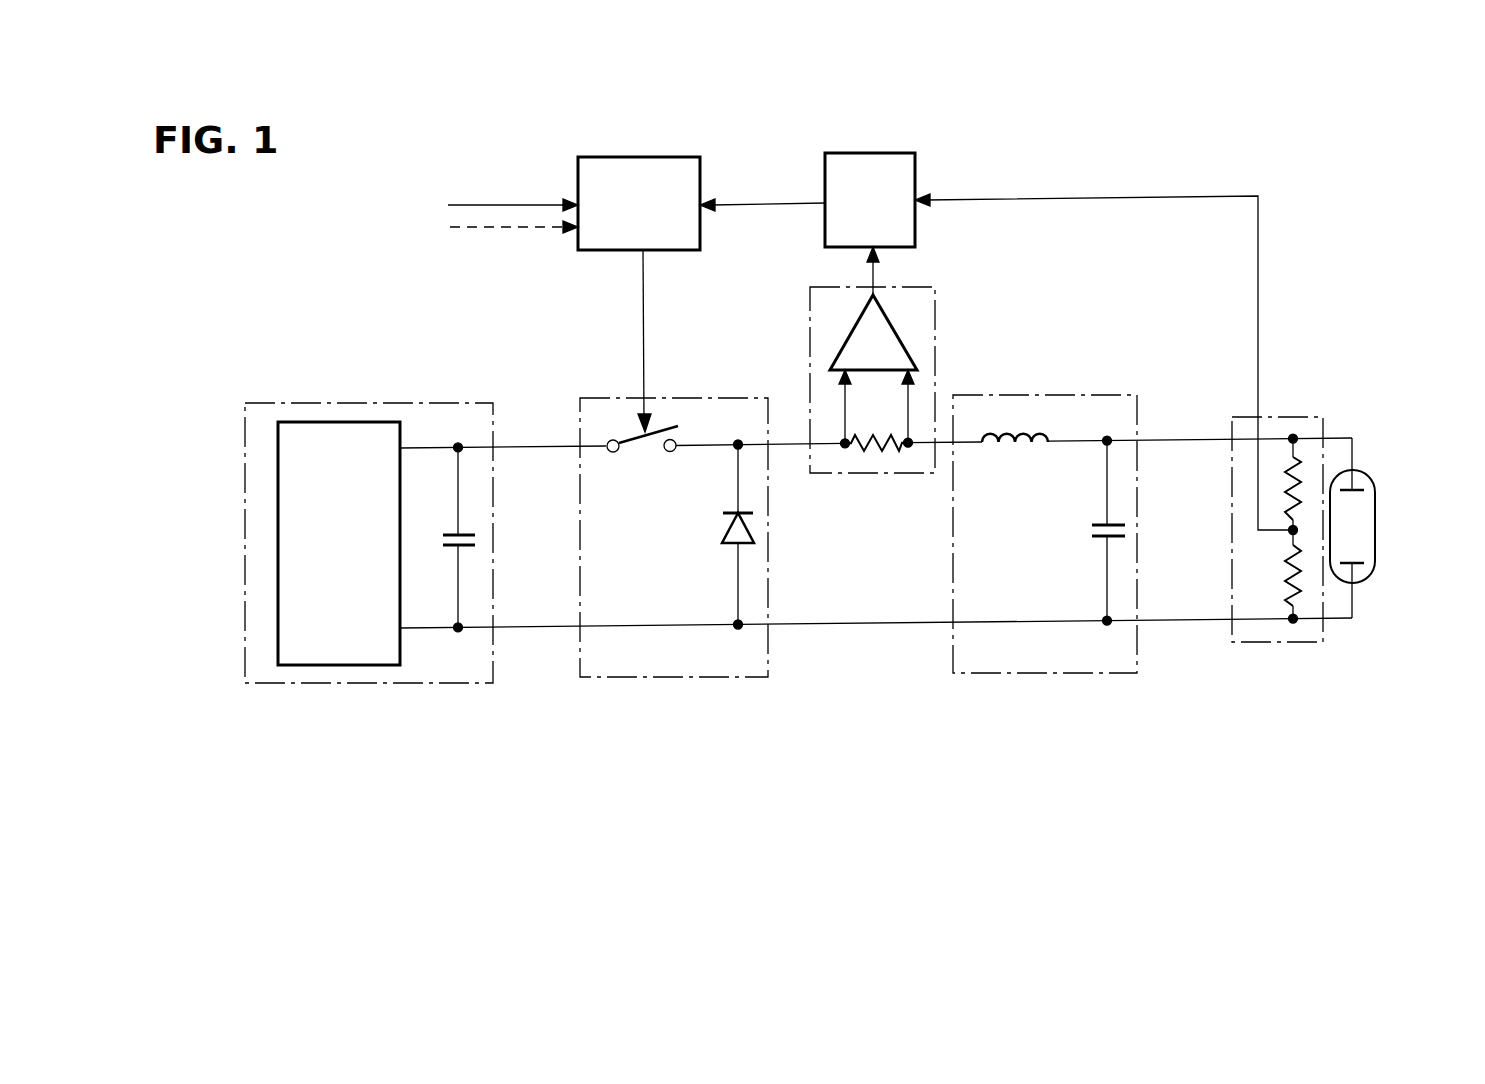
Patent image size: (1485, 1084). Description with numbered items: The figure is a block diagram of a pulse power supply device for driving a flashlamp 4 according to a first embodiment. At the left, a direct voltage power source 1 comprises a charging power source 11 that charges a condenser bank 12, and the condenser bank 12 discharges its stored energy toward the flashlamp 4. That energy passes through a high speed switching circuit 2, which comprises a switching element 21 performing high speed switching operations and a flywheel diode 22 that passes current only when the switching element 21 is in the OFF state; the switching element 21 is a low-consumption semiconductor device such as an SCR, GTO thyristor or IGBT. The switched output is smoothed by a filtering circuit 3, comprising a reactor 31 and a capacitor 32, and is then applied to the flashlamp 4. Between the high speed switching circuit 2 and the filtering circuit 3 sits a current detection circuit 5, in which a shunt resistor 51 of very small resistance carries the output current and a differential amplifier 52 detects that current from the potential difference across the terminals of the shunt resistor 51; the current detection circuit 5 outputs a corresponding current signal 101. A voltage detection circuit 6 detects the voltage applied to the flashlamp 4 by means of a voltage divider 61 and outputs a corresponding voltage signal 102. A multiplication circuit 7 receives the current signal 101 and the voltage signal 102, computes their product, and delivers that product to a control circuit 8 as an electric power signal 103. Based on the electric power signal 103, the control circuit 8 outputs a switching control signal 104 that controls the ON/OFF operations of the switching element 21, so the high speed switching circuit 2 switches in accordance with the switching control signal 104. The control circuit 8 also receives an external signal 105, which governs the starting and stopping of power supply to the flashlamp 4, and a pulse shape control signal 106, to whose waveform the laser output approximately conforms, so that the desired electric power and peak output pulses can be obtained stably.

The direct voltage power source 1 is at (440, 591).
The high speed switching circuit 2 is at (768, 623).
The filtering circuit 3 is at (1063, 608).
The flashlamp 4 is at (1375, 560).
The current detection circuit 5 is at (951, 429).
The voltage detection circuit 6 is at (1347, 577).
The multiplication circuit 7 is at (870, 153).
The control circuit 8 is at (645, 157).
The charging power source 11 is at (333, 422).
The condenser bank 12 is at (449, 549).
The switching element 21 is at (628, 452).
The flywheel diode 22 is at (756, 533).
The reactor 31 is at (1007, 455).
The capacitor 32 is at (1092, 533).
The shunt resistor 51 is at (865, 455).
The differential amplifier 52 is at (845, 337).
The voltage divider 61 is at (1293, 530).
The current signal 101 is at (873, 272).
The voltage signal 102 is at (1053, 197).
The electric power signal 103 is at (758, 203).
The switching control signal 104 is at (643, 366).
The external signal 105 is at (508, 205).
The pulse shape control signal 106 is at (445, 240).